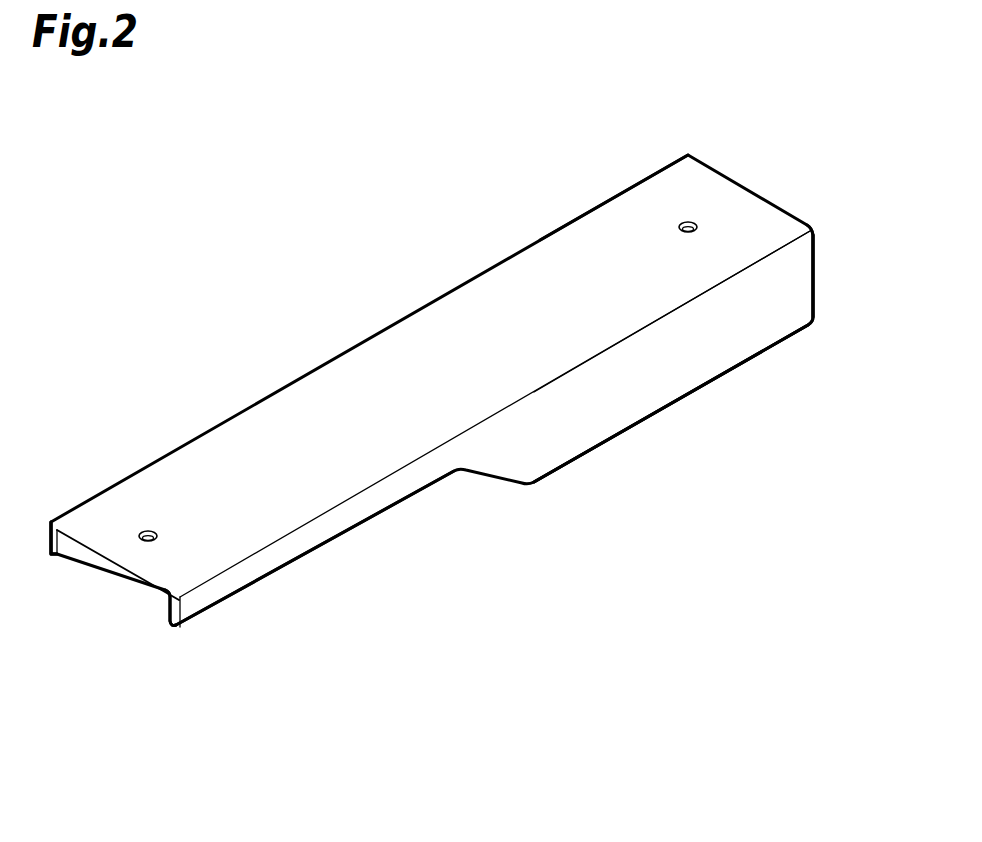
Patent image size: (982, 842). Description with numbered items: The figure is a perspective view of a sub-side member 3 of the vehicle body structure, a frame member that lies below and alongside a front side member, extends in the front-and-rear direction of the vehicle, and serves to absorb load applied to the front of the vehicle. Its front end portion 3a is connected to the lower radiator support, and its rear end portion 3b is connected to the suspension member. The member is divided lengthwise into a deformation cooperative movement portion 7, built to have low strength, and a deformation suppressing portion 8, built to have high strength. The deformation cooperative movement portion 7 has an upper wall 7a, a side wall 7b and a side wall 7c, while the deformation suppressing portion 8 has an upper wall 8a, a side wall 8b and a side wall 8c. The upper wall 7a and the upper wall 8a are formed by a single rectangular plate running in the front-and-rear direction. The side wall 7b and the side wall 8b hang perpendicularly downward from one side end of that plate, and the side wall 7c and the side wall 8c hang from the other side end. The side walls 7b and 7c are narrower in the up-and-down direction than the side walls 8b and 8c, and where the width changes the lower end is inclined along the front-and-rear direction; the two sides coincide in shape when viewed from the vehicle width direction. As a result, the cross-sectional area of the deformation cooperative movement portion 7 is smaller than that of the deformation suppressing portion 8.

The sub-side member 3 is at (299, 203).
The front end portion 3a is at (92, 521).
The rear end portion 3b is at (749, 218).
The deformation cooperative movement portion 7 is at (456, 543).
The upper wall 7a is at (167, 495).
The side wall 7b is at (67, 543).
The side wall 7c is at (167, 607).
The deformation suppressing portion 8 is at (820, 335).
The upper wall 8a is at (643, 222).
The side wall 8b is at (578, 252).
The side wall 8c is at (788, 292).